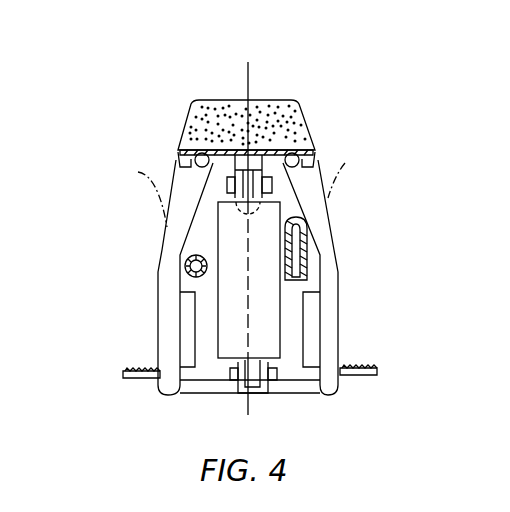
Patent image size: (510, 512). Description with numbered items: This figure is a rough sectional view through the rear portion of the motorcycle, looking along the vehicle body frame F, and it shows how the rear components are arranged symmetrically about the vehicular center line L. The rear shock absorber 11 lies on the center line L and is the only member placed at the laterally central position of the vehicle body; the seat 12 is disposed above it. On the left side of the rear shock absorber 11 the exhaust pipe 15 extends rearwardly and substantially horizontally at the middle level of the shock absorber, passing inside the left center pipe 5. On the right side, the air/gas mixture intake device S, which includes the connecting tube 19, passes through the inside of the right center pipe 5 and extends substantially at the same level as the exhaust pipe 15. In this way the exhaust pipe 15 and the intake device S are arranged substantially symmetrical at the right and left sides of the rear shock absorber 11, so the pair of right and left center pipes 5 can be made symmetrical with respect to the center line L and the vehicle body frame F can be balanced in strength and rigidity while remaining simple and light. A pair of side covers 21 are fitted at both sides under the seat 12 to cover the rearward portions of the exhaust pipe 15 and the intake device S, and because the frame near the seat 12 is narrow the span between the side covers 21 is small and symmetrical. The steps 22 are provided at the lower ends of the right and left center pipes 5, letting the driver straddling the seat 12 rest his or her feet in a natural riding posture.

The seat 12 is at (290, 100).
The side covers 21 is at (240, 191).
The rear shock absorber 11 is at (268, 222).
The exhaust pipe 15 is at (186, 258).
The connecting tube 19 is at (310, 250).
The center pipes 5 is at (157, 289).
The air/gas mixture intake device S is at (306, 267).
The vehicle body frame F is at (149, 330).
The steps 22 is at (140, 378).
The vehicular center line L is at (252, 253).